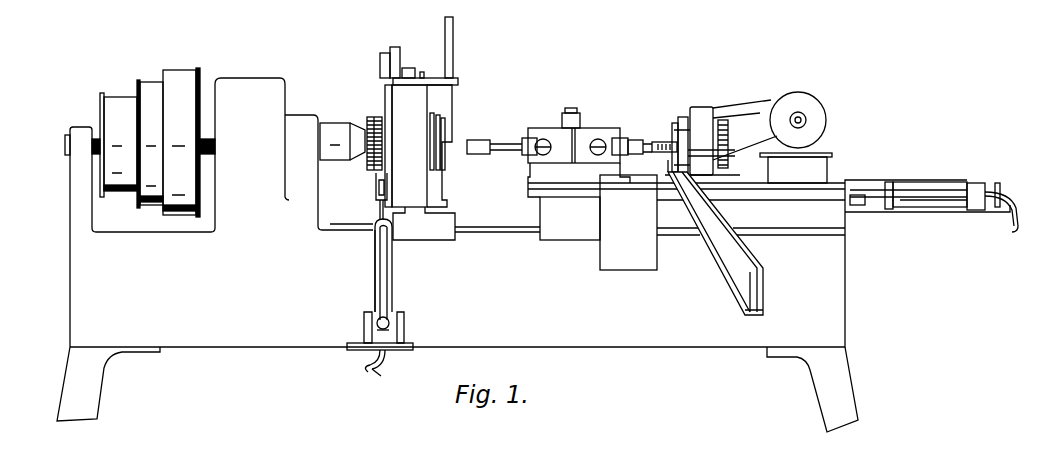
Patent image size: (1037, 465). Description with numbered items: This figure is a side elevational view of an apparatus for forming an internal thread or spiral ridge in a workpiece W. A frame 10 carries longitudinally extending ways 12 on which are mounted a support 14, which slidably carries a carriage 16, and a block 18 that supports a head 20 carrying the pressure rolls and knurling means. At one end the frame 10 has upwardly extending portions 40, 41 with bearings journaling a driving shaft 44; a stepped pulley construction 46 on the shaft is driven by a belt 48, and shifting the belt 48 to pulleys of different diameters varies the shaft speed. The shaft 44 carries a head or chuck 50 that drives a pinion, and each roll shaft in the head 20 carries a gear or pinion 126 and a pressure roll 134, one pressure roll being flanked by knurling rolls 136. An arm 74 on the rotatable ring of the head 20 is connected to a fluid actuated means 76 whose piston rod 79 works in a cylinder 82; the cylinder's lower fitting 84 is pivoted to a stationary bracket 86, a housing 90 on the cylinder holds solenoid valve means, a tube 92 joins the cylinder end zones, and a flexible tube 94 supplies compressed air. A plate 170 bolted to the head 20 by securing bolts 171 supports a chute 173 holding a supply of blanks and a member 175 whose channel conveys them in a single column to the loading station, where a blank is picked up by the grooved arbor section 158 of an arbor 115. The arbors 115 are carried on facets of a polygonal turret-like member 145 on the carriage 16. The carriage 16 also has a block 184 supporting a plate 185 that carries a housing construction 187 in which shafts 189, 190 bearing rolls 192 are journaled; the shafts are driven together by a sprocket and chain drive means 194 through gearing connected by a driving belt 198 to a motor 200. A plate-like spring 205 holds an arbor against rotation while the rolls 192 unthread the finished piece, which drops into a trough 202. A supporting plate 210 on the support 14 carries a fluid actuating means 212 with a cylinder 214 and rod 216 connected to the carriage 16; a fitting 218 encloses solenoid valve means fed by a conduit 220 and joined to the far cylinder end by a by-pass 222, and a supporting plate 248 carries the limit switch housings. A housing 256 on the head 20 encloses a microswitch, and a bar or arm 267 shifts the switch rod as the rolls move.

The frame 10 is at (670, 347).
The ways 12 is at (494, 226).
The support 14 is at (580, 242).
The carriage 16 is at (812, 183).
The block 18 is at (428, 241).
The head 20 is at (393, 166).
The upwardly extending portion 40 is at (80, 127).
The upwardly extending portion 41 is at (248, 78).
The driving shaft 44 is at (63, 150).
The stepped pulley construction 46 is at (112, 200).
The belt 48 is at (148, 80).
The head or chuck 50 is at (350, 122).
The arm 74 is at (376, 186).
The fluid actuated means 76 is at (396, 283).
The piston rod 79 is at (378, 209).
The cylinder 82 is at (374, 281).
The fitting 84 is at (404, 321).
The stationary bracket 86 is at (370, 327).
The housing 90 is at (377, 332).
The tube 92 is at (380, 257).
The flexible tube 94 is at (384, 370).
The arbor 115 is at (498, 132).
The gear or pinion 126 is at (367, 168).
The pressure roll 134 is at (446, 170).
The knurling rolls 136 is at (440, 165).
The turret-like member 145 is at (588, 128).
The grooved arbor section 158 is at (470, 140).
The plate 170 is at (458, 79).
The securing bolts 171 is at (424, 72).
The chute 173 is at (454, 35).
The member 175 is at (453, 93).
The block 184 is at (763, 176).
The plate 185 is at (822, 152).
The housing construction 187 is at (706, 107).
The shaft 189 is at (683, 117).
The shaft 190 is at (670, 180).
The roll 192 is at (676, 123).
The sprocket and chain drive means 194 is at (729, 146).
The driving belt 198 is at (758, 106).
The motor 200 is at (823, 104).
The trough 202 is at (740, 268).
The plate-like spring 205 is at (652, 178).
The extension or supporting plate 210 is at (912, 214).
The fluid actuating means 212 is at (922, 182).
The cylinder 214 is at (933, 174).
The rod 216 is at (864, 205).
The housing or fitting 218 is at (976, 183).
The conduit 220 is at (1017, 233).
The by-pass 222 is at (945, 200).
The supporting plate 248 is at (874, 180).
The housing 256 is at (398, 48).
The bar or arm 267 is at (383, 92).
The workpiece W is at (668, 146).